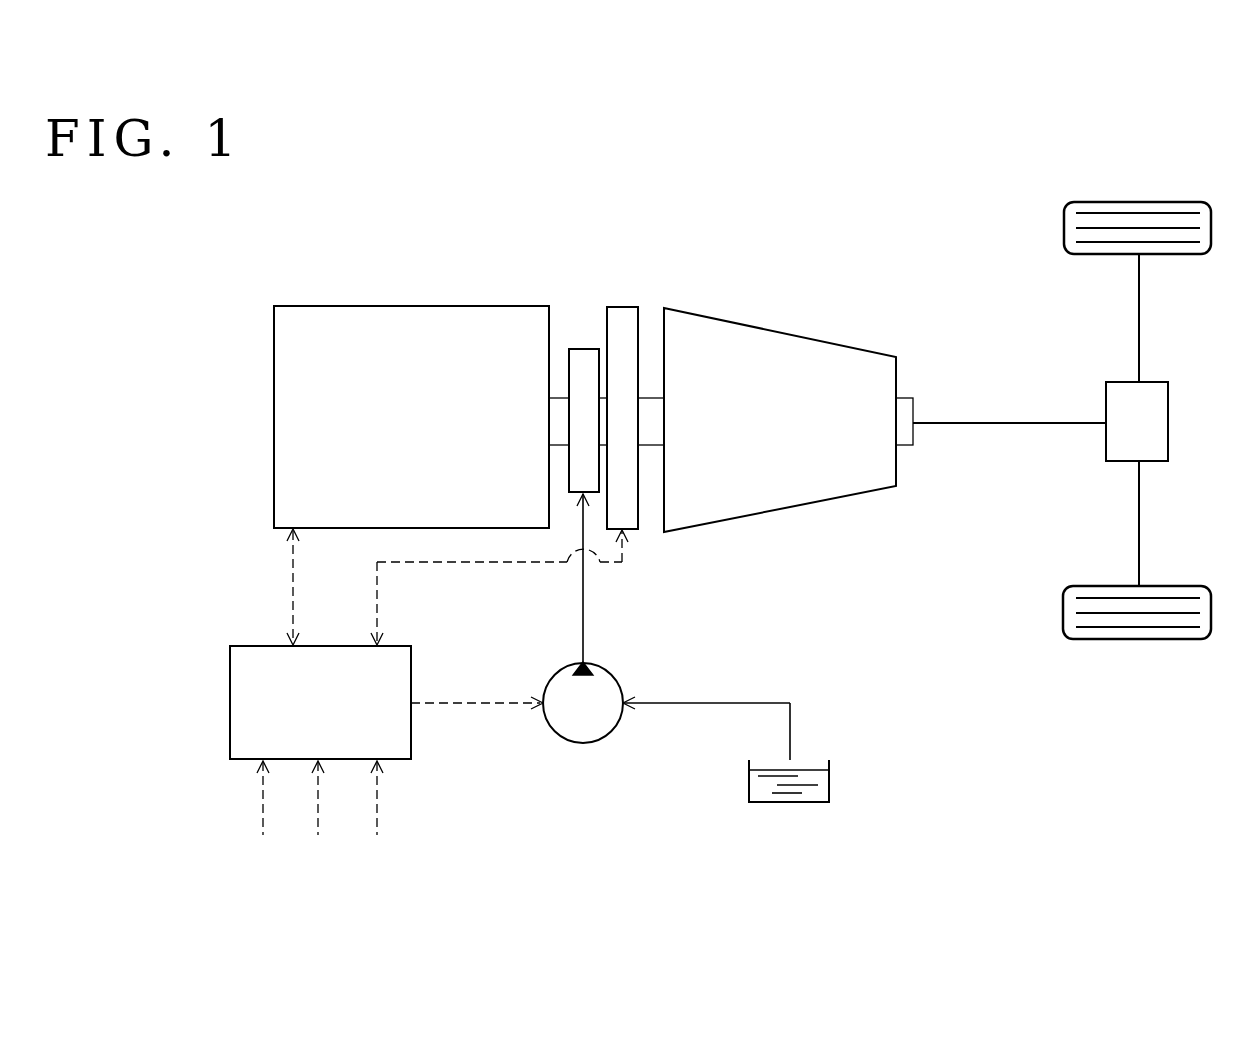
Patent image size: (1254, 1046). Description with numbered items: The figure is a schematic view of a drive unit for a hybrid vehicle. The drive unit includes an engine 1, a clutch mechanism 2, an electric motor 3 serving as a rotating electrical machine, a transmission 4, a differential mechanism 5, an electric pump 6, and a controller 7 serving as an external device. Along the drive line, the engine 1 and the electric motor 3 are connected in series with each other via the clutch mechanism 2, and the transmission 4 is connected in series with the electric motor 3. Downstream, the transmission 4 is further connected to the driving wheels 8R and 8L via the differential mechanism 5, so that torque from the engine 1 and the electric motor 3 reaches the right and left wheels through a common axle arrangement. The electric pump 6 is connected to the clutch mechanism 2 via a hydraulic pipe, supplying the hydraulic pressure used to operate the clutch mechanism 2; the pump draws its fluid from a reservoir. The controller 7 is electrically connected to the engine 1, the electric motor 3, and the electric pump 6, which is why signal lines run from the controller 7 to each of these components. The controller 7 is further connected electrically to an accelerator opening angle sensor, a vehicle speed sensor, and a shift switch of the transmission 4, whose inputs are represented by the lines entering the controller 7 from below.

The engine 1 is at (422, 304).
The clutch mechanism 2 is at (582, 347).
The electric motor 3 is at (624, 306).
The transmission 4 is at (791, 337).
The differential mechanism 5 is at (1106, 393).
The electric pump 6 is at (580, 745).
The controller 7 is at (230, 702).
The driving wheel 8R is at (1090, 200).
The driving wheel 8L is at (1145, 641).